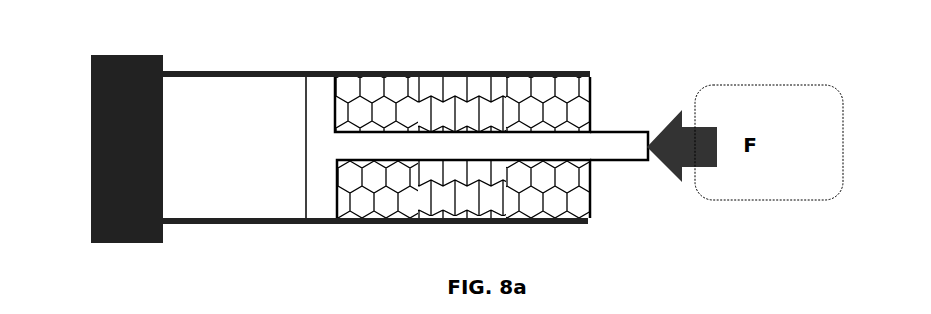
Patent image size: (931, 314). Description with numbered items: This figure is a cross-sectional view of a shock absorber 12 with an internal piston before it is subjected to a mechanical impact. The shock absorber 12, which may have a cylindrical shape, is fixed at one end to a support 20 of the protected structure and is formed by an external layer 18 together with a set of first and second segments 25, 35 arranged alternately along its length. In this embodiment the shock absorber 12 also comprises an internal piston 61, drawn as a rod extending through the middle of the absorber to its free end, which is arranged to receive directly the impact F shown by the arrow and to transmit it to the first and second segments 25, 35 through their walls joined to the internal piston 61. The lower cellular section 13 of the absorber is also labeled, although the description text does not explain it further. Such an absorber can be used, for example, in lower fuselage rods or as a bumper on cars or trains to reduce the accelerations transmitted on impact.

The shock absorber 12 is at (207, 63).
The lower honeycomb section 13 is at (495, 215).
The external layer 18 is at (357, 71).
The support 20 is at (90, 152).
The first segments 25 is at (388, 210).
The second segments 35 is at (455, 205).
The internal piston 61 is at (622, 142).